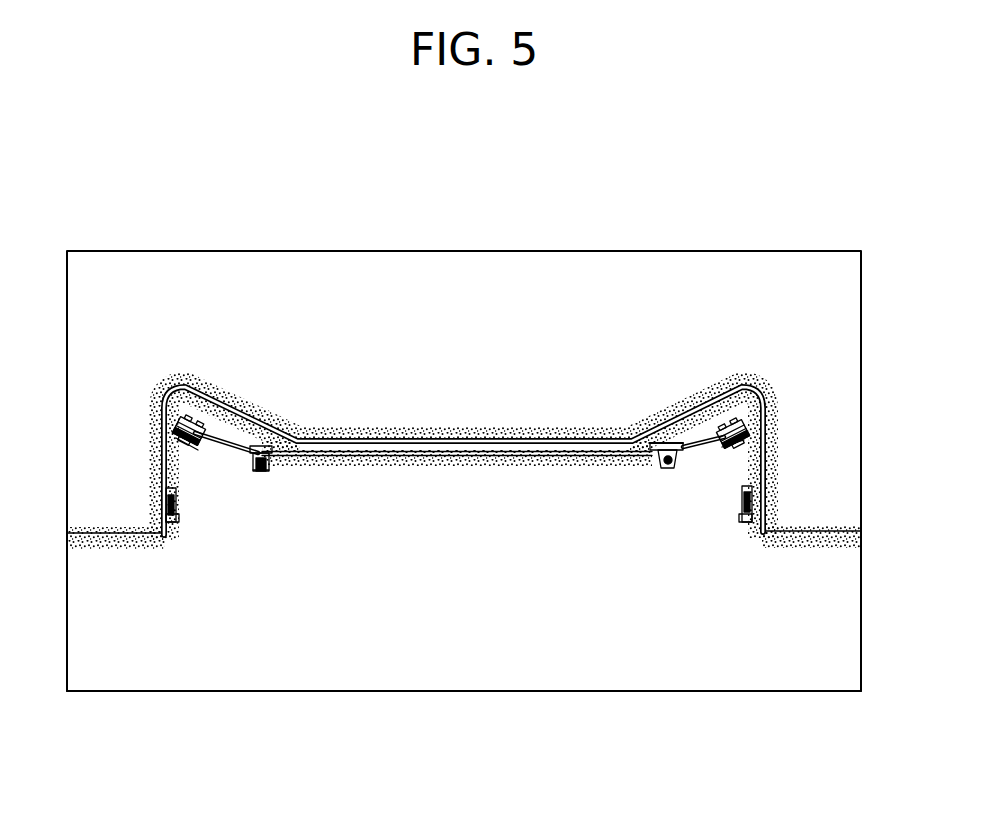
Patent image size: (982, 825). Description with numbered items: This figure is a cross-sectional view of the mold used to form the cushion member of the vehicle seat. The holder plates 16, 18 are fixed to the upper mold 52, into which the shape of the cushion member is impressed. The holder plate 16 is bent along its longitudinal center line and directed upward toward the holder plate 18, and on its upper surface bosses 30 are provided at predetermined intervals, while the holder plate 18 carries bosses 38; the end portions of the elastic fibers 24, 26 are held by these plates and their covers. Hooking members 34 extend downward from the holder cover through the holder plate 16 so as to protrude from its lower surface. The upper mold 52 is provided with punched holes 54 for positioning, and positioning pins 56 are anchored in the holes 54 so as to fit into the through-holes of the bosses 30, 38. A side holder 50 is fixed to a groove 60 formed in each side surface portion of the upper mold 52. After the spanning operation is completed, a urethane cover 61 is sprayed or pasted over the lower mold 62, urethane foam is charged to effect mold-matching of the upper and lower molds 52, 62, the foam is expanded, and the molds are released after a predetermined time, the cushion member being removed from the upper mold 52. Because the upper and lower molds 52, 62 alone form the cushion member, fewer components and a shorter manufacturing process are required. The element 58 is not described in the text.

The holder plate 16 is at (270, 466).
The holder plate 18 is at (196, 450).
The elastic fibers 24 is at (507, 458).
The elastic fibers 26 is at (225, 450).
The bosses 30 is at (262, 447).
The hooking members 34 is at (661, 466).
The bosses 38 is at (190, 422).
The side holder 50 is at (168, 498).
The upper mold 52 is at (393, 666).
The holes 54 is at (180, 449).
The positioning pins 56 is at (195, 437).
The pivot pin 58 is at (670, 466).
The groove 60 is at (170, 526).
The urethane cover 61 is at (493, 443).
The lower mold 62 is at (556, 262).